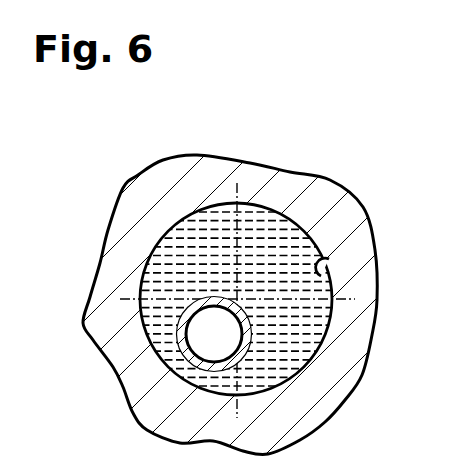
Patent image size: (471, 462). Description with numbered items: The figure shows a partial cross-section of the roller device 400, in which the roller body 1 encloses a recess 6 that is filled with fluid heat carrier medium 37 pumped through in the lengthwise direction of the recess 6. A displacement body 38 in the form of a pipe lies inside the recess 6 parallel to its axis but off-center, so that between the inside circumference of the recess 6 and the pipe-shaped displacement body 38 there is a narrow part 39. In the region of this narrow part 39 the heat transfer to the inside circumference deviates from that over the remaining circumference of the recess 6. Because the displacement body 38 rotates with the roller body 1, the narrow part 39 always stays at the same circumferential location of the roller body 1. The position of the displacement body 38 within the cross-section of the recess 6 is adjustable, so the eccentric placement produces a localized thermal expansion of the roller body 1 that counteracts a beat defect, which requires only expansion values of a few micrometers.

The roller device 400 is at (129, 185).
The roller body 1 is at (347, 195).
The fluid heat carrier medium 37 is at (265, 240).
The recess 6 is at (337, 254).
The displacement body 38 is at (240, 343).
The narrow part 39 is at (195, 366).